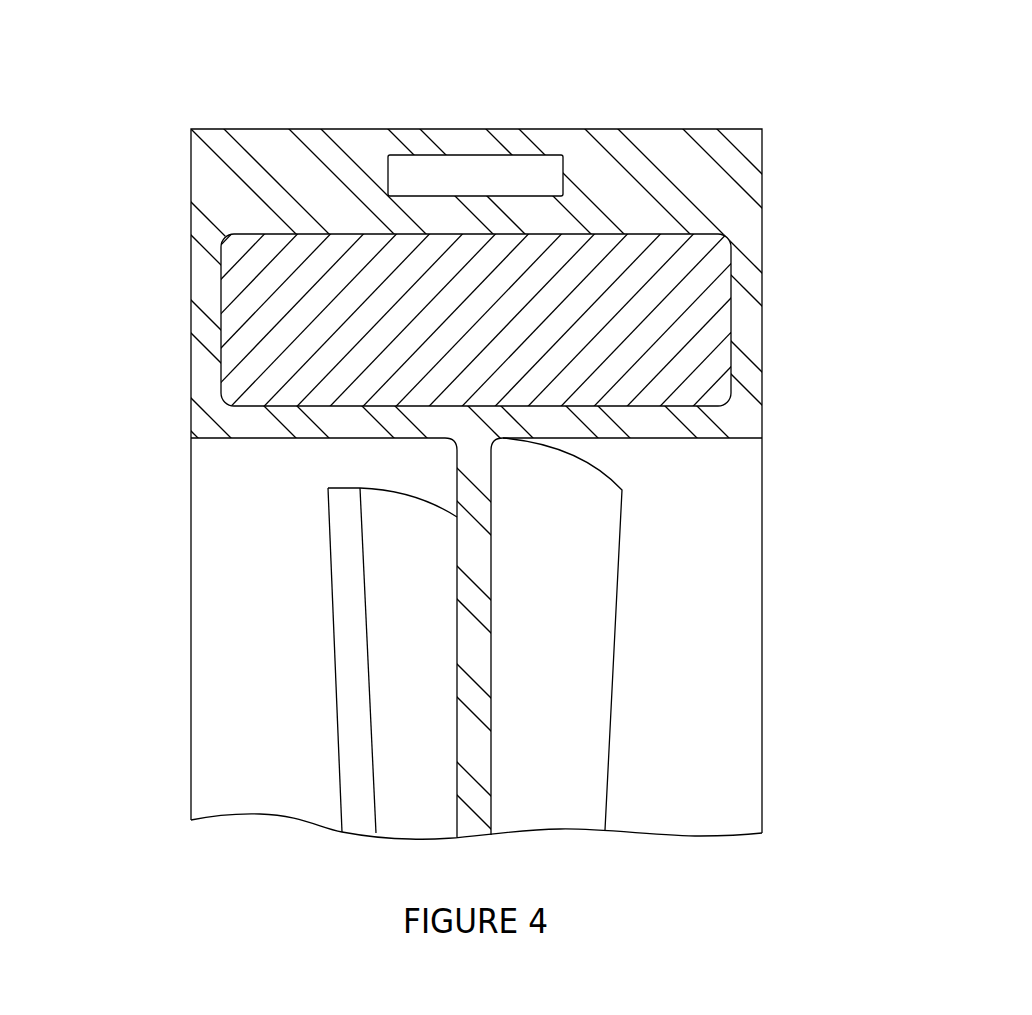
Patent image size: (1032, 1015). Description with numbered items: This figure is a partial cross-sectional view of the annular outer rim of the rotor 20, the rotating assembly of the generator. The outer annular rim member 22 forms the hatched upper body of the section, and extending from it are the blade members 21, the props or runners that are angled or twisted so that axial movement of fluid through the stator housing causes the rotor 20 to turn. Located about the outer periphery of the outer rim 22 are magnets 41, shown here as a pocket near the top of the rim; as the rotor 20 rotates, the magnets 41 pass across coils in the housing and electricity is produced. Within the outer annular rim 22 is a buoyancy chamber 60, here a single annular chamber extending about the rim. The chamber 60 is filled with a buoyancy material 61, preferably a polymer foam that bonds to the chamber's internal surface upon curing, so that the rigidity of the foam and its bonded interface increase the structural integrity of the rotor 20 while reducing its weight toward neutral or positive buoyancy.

The rotor 20 is at (148, 477).
The blade members 21 is at (352, 761).
The outer annular rim member 22 is at (203, 273).
The magnets 41 is at (481, 178).
The buoyancy chamber 60 is at (702, 232).
The buoyancy material 61 is at (632, 285).